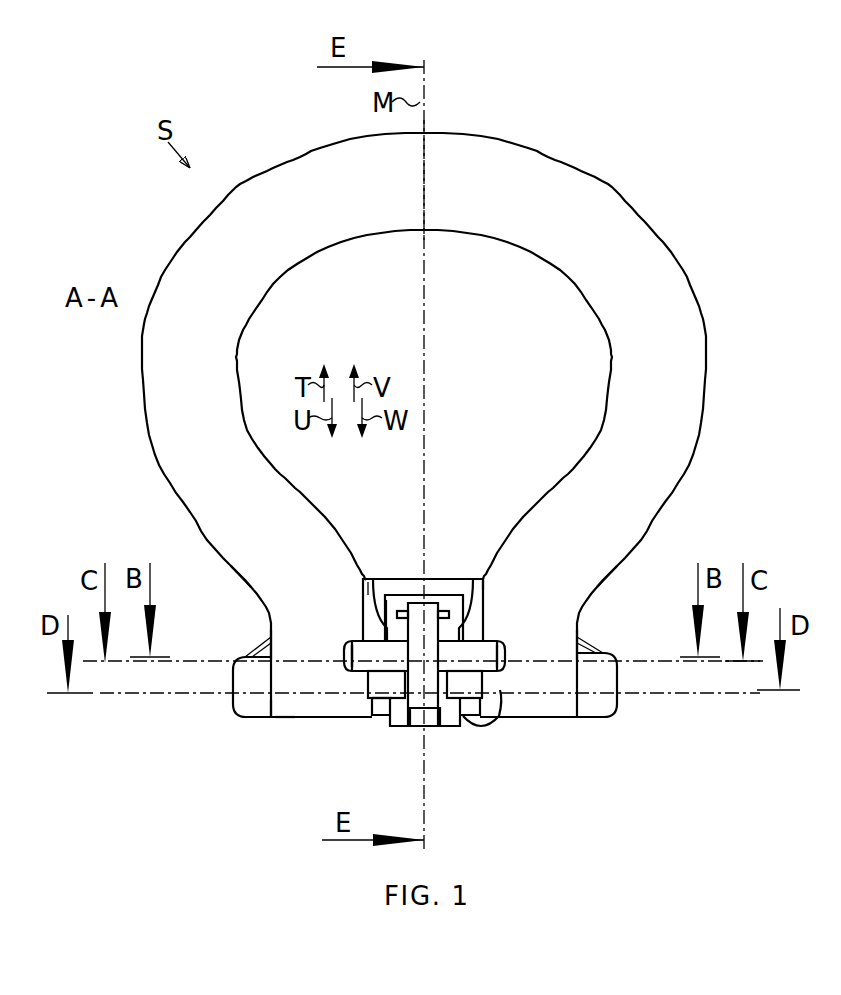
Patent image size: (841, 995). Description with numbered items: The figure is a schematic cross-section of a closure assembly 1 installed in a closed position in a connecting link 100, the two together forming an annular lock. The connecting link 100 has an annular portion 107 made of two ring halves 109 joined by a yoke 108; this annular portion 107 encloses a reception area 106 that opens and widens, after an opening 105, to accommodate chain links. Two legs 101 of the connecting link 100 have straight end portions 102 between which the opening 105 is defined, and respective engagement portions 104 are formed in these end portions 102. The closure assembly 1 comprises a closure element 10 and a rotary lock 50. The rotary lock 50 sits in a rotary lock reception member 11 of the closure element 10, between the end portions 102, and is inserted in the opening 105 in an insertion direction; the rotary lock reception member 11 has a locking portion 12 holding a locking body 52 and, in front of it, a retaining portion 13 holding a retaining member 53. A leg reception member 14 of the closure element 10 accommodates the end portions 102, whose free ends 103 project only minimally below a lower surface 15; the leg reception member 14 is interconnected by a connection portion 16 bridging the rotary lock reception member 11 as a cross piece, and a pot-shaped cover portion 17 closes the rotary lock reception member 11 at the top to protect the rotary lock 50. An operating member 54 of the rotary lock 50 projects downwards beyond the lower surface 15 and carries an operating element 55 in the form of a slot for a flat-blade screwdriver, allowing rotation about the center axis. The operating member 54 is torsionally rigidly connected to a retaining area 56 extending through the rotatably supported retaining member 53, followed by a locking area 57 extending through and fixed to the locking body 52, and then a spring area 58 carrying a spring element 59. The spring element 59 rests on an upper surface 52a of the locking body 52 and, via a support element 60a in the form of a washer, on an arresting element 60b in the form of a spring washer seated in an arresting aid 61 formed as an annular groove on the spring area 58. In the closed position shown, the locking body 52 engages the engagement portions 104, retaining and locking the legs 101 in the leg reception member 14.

The closure assembly 1 is at (375, 735).
The closure element 10 is at (228, 703).
The rotary lock reception member 11 is at (368, 583).
The locking portion 12 is at (347, 645).
The retaining portion 13 is at (366, 694).
The leg reception member 14 is at (268, 720).
The lower surface 15 is at (260, 720).
The connection portion 16 is at (366, 647).
The cover portion 17 is at (394, 588).
The rotary lock 50 is at (460, 733).
The locking body 52 is at (364, 610).
The upper surface 52a is at (368, 580).
The retaining member 53 is at (284, 718).
The operating member 54 is at (396, 728).
The operating element 55 is at (418, 722).
The retaining area 56 is at (498, 718).
The locking area 57 is at (440, 722).
The spring area 58 is at (403, 596).
The spring element 59 is at (484, 626).
The support element 60a is at (482, 581).
The arresting element 60b is at (445, 611).
The arresting aid 61 is at (431, 604).
The connecting link 100 is at (173, 203).
The legs 101 is at (293, 620).
The end portions 102 is at (366, 680).
The free ends 103 is at (318, 718).
The engagement portions 104 is at (360, 622).
The opening 105 is at (454, 628).
The reception area 106 is at (470, 307).
The annular portion 107 is at (615, 213).
The yoke 108 is at (427, 178).
The ring halves 109 is at (160, 360).